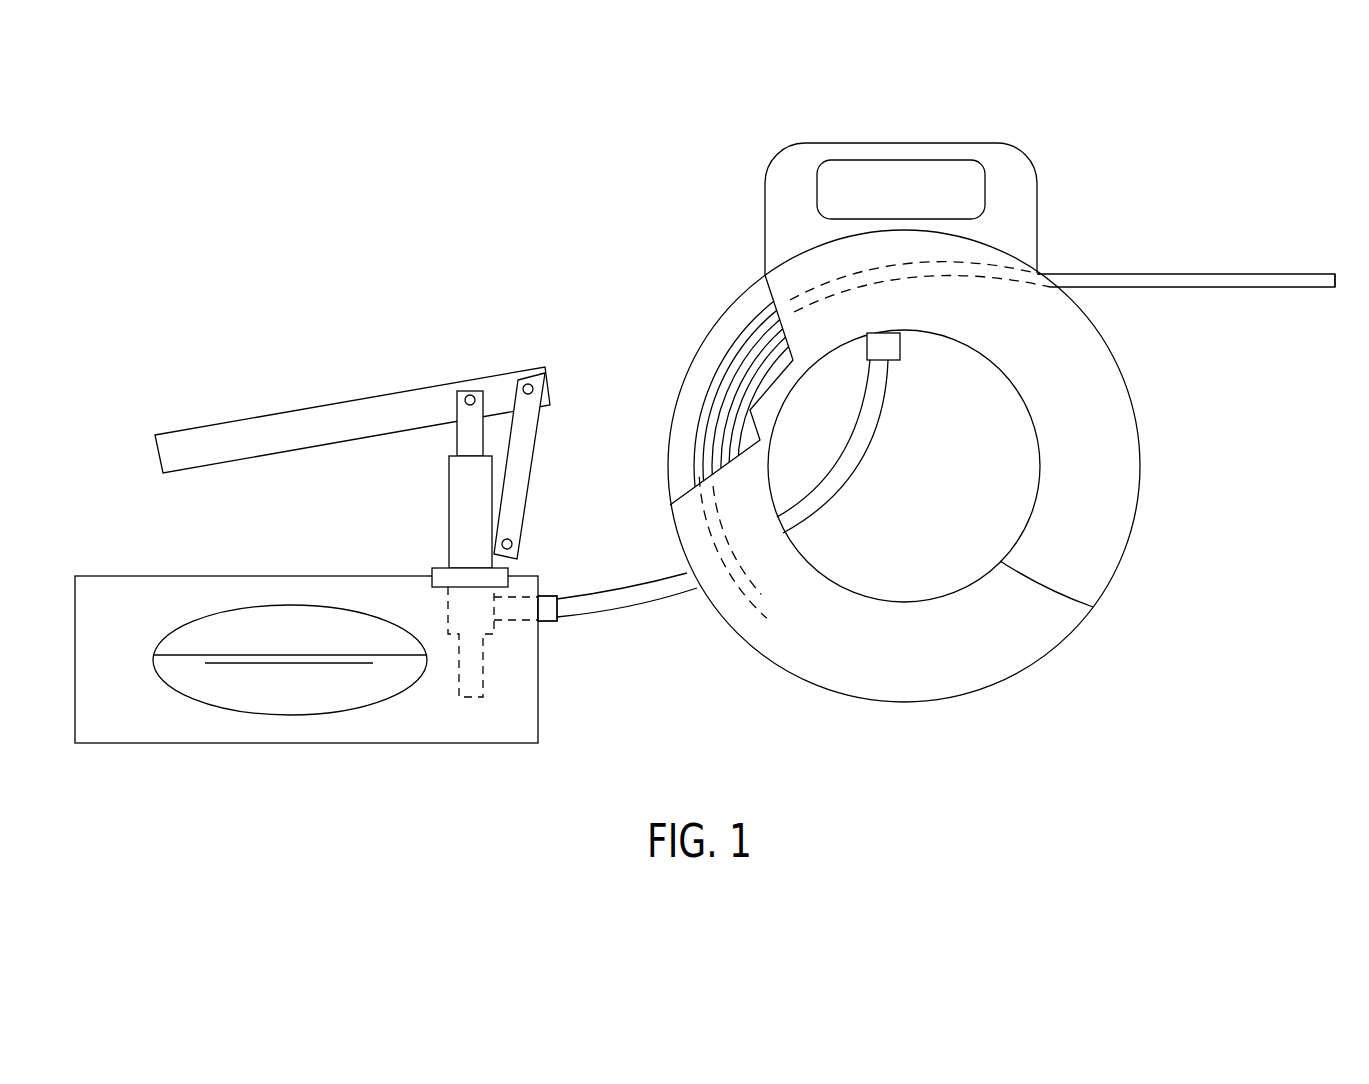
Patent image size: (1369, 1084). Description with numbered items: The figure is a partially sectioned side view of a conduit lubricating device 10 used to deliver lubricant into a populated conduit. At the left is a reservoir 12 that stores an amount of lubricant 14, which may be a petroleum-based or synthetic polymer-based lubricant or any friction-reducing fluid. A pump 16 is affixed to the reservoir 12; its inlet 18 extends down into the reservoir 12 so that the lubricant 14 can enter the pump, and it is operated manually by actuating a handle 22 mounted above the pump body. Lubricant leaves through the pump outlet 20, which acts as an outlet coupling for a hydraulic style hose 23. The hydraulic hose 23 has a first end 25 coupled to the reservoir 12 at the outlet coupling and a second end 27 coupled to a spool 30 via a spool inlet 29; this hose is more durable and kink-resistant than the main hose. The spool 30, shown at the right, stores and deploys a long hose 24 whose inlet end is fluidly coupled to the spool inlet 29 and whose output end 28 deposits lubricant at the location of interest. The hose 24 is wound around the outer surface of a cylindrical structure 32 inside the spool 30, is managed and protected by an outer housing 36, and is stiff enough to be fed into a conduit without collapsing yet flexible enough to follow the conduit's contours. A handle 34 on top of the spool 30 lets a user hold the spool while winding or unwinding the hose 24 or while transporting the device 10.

The conduit lubricating device 10 is at (232, 243).
The reservoir 12 is at (113, 563).
The lubricant 14 is at (269, 699).
The pump 16 is at (463, 372).
The inlet 18 is at (471, 699).
The outlet 20 is at (547, 596).
The handle 22 is at (273, 413).
The hydraulic style hose 23 is at (635, 603).
The hose 24 is at (718, 363).
The first end 25 is at (560, 625).
The second end 27 is at (862, 357).
The output end 28 is at (1325, 288).
The spool inlet 29 is at (900, 343).
The spool 30 is at (1042, 670).
The cylindrical structure 32 is at (1087, 607).
The handle 34 is at (1018, 184).
The outer housing 36 is at (1100, 513).